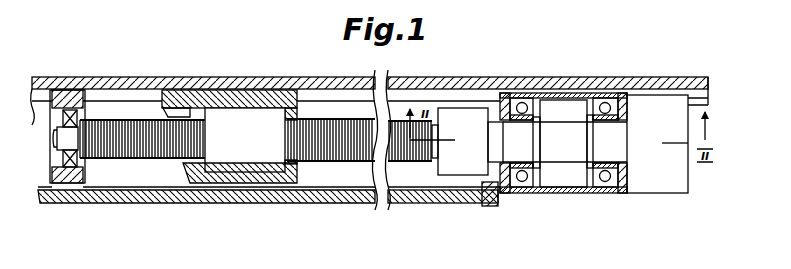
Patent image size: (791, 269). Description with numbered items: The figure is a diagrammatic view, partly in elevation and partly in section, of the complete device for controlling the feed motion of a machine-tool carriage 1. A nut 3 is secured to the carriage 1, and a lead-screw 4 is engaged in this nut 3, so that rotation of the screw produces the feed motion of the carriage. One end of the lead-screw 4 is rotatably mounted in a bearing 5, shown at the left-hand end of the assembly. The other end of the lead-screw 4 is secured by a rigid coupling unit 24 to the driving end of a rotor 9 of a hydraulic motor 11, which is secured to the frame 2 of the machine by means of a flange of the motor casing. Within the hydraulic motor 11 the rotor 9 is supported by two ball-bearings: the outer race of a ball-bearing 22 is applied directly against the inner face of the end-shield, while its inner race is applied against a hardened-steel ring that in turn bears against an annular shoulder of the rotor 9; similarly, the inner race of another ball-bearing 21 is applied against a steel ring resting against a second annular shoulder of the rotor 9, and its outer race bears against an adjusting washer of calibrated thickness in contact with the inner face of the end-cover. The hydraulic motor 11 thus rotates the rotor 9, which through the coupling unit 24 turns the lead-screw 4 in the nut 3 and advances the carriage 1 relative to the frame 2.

The machine-tool carriage 1 is at (152, 77).
The frame 2 is at (311, 203).
The nut 3 is at (252, 158).
The lead-screw 4 is at (349, 158).
The bearing 5 is at (70, 183).
The rotor 9 is at (571, 153).
The hydraulic motor 11 is at (591, 197).
The ball-bearing 21 is at (522, 103).
The ball-bearing 22 is at (607, 103).
The rigid coupling unit 24 is at (468, 177).